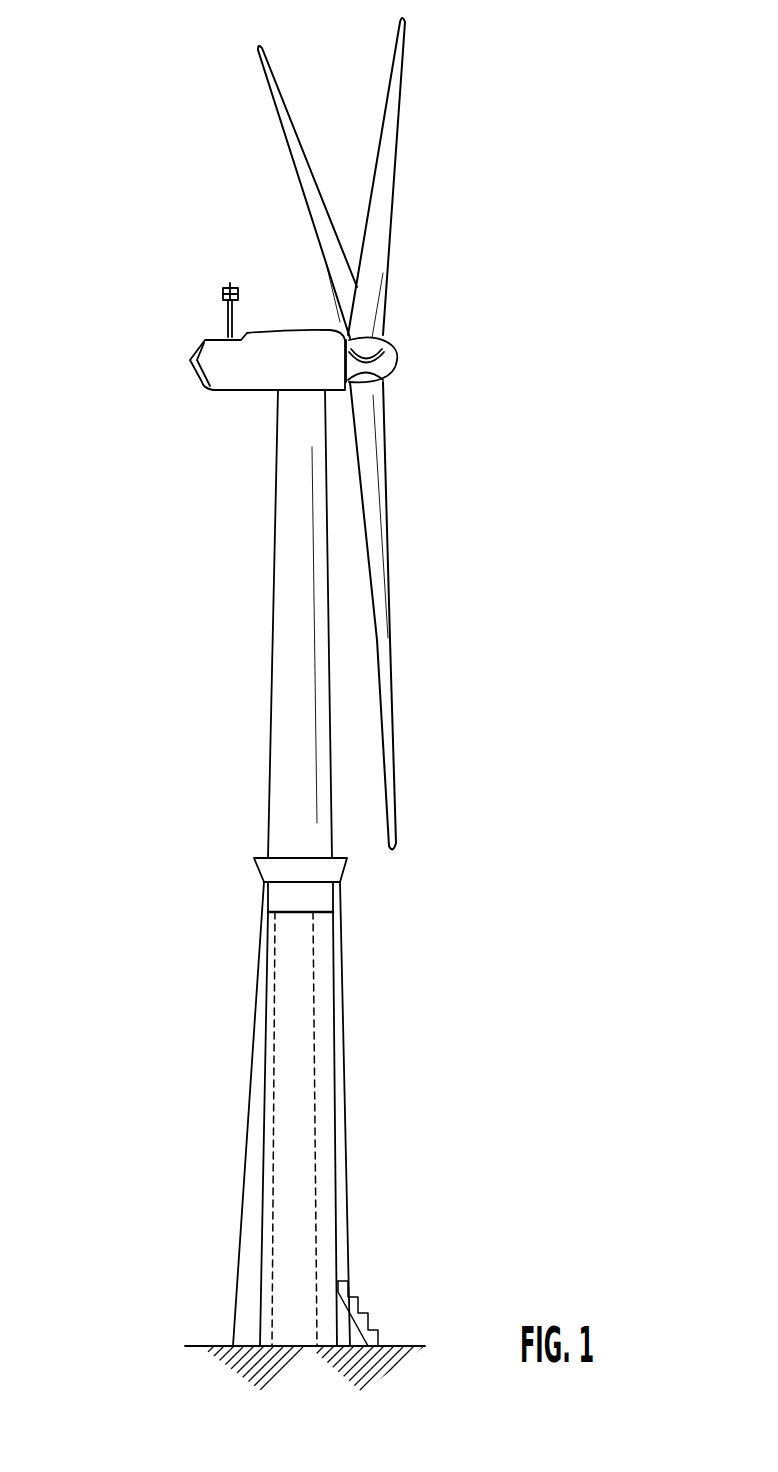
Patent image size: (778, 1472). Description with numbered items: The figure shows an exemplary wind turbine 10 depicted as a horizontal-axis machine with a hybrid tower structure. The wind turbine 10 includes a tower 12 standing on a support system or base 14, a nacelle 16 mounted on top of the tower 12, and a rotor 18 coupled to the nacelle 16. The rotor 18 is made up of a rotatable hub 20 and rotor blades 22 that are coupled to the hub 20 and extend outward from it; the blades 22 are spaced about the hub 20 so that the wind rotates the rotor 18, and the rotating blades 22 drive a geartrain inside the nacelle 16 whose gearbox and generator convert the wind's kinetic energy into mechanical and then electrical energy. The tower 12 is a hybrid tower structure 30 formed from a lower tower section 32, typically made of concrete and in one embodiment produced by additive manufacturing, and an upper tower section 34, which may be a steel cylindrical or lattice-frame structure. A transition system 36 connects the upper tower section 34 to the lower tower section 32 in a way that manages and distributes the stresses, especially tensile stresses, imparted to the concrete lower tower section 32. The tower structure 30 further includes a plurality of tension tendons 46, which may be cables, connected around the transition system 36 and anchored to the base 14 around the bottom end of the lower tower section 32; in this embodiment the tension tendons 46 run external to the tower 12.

The wind turbine 10 is at (572, 126).
The tower 12 is at (313, 947).
The base 14 is at (202, 1346).
The nacelle 16 is at (245, 392).
The rotor 18 is at (441, 289).
The rotatable hub 20 is at (396, 357).
The rotor blade 22 is at (308, 160).
The hybrid tower structure 30 is at (185, 710).
The lower tower section 32 is at (265, 1115).
The upper tower section 34 is at (275, 588).
The transition system 36 is at (235, 893).
The tension tendons 46 is at (240, 1243).